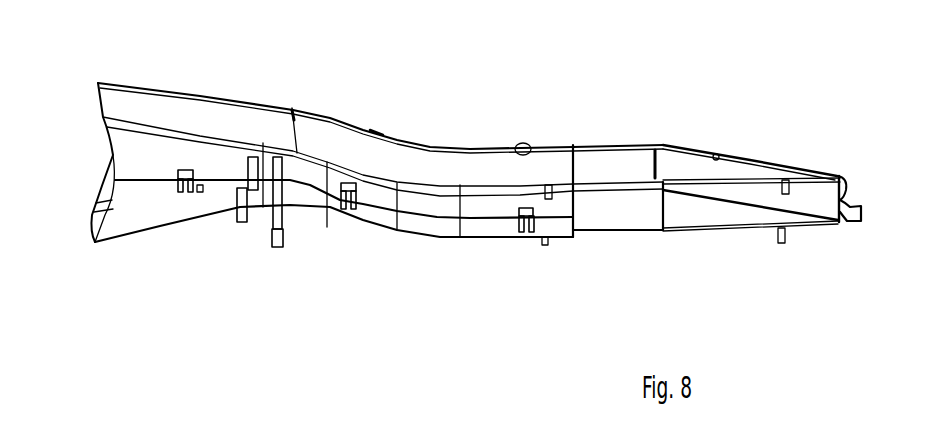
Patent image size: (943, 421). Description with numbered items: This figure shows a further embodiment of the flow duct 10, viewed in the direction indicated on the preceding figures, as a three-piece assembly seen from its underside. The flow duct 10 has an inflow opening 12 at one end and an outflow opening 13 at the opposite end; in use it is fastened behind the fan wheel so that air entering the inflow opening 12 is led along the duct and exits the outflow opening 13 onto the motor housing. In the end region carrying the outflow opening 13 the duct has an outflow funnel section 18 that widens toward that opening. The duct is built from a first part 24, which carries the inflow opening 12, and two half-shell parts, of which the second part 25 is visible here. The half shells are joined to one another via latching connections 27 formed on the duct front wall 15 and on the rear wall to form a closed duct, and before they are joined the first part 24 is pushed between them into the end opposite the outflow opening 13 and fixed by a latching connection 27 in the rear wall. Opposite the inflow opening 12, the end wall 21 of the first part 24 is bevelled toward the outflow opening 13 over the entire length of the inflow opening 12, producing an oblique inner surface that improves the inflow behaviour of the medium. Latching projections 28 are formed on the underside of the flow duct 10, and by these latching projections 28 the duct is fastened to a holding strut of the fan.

The flow duct 10 is at (440, 124).
The inflow opening 12 is at (702, 207).
The outflow opening 13 is at (102, 218).
The front wall 15 is at (438, 218).
The outflow funnel section 18 is at (142, 103).
The end wall 21 is at (817, 200).
The first part 24 is at (725, 152).
The second part 25 is at (532, 147).
The latching connection 27 is at (183, 194).
The latching projection 28 is at (273, 248).